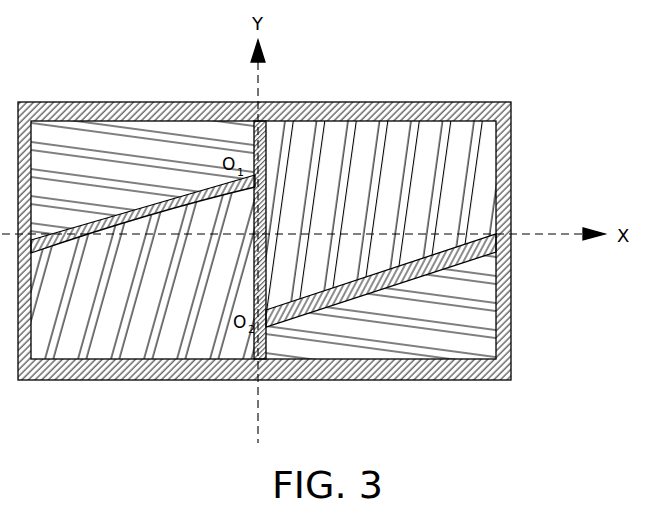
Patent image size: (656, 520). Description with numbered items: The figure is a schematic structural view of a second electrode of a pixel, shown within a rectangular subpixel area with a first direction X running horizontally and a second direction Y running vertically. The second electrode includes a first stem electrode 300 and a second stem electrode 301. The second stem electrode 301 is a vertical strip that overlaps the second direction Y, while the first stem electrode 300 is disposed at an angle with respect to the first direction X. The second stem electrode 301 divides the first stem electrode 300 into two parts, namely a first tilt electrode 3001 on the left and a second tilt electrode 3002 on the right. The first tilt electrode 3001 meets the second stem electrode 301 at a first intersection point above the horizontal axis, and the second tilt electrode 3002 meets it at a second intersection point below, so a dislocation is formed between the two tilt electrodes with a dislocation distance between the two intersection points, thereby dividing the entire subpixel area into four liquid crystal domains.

The first stem electrode 300 is at (402, 278).
The second stem electrode 301 is at (262, 135).
The first tilt electrode 3001 is at (152, 205).
The second tilt electrode 3002 is at (305, 312).